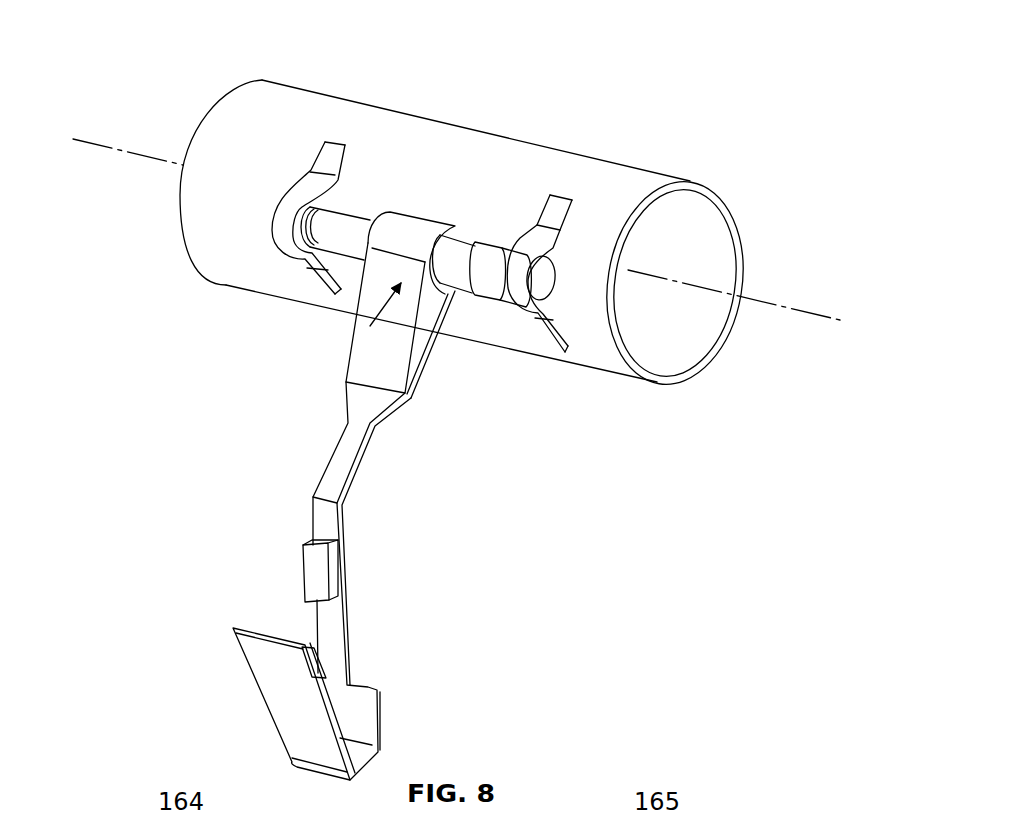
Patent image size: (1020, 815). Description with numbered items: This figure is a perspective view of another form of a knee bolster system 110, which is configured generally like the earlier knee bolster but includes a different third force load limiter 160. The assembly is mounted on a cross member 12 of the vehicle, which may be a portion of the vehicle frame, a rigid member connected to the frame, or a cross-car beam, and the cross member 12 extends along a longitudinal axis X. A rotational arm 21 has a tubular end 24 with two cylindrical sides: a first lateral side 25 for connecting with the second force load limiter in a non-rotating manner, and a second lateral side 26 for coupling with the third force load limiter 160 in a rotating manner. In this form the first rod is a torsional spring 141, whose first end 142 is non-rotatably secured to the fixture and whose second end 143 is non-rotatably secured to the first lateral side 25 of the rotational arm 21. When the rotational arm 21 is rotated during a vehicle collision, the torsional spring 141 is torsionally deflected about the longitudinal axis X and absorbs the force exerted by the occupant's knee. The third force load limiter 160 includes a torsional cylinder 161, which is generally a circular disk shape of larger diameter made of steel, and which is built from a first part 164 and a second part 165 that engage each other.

The cross member 12 is at (645, 182).
The rotational arm 21 is at (342, 472).
The tubular end 24 is at (348, 382).
The first lateral side 25 is at (393, 223).
The second lateral side 26 is at (485, 236).
The knee bolster system 110 is at (204, 479).
The torsional spring 141 is at (361, 252).
The first end 142 is at (273, 242).
The second end 143 is at (348, 220).
The third force load limiter 160 is at (521, 326).
The torsional cylinder 161 is at (483, 312).
The first part 164 is at (529, 232).
The second part 165 is at (538, 266).
The longitudinal axis X is at (101, 142).